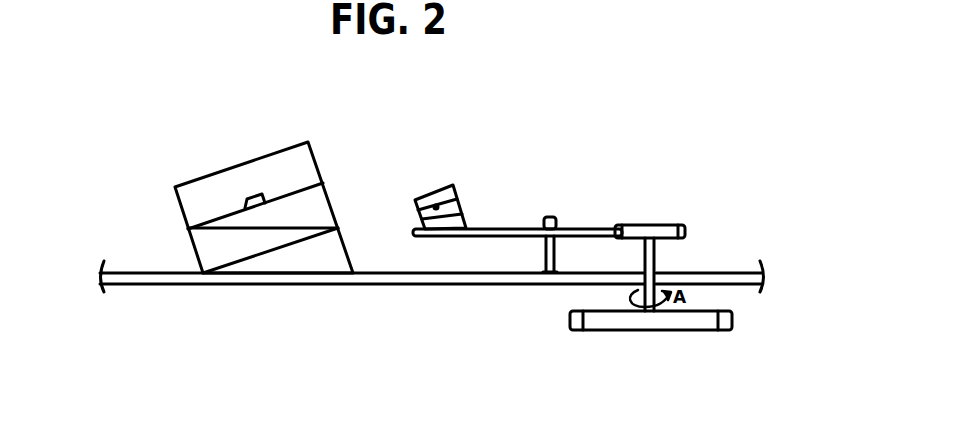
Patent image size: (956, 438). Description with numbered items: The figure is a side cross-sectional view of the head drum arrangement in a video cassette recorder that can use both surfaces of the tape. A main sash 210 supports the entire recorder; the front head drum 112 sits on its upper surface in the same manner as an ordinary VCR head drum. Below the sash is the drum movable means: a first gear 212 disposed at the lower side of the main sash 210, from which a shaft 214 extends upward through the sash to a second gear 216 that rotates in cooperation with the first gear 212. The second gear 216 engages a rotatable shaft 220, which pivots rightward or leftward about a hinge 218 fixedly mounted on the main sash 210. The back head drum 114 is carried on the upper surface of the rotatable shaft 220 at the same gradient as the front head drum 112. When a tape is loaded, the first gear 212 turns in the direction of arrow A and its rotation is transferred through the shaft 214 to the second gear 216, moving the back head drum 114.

The front head drum 112 is at (263, 155).
The back head drum 114 is at (438, 187).
The main sash 210 is at (277, 285).
The first gear 212 is at (655, 332).
The shaft 214 is at (657, 257).
The second gear 216 is at (663, 225).
The hinge 218 is at (543, 255).
The rotatable shaft 220 is at (592, 227).